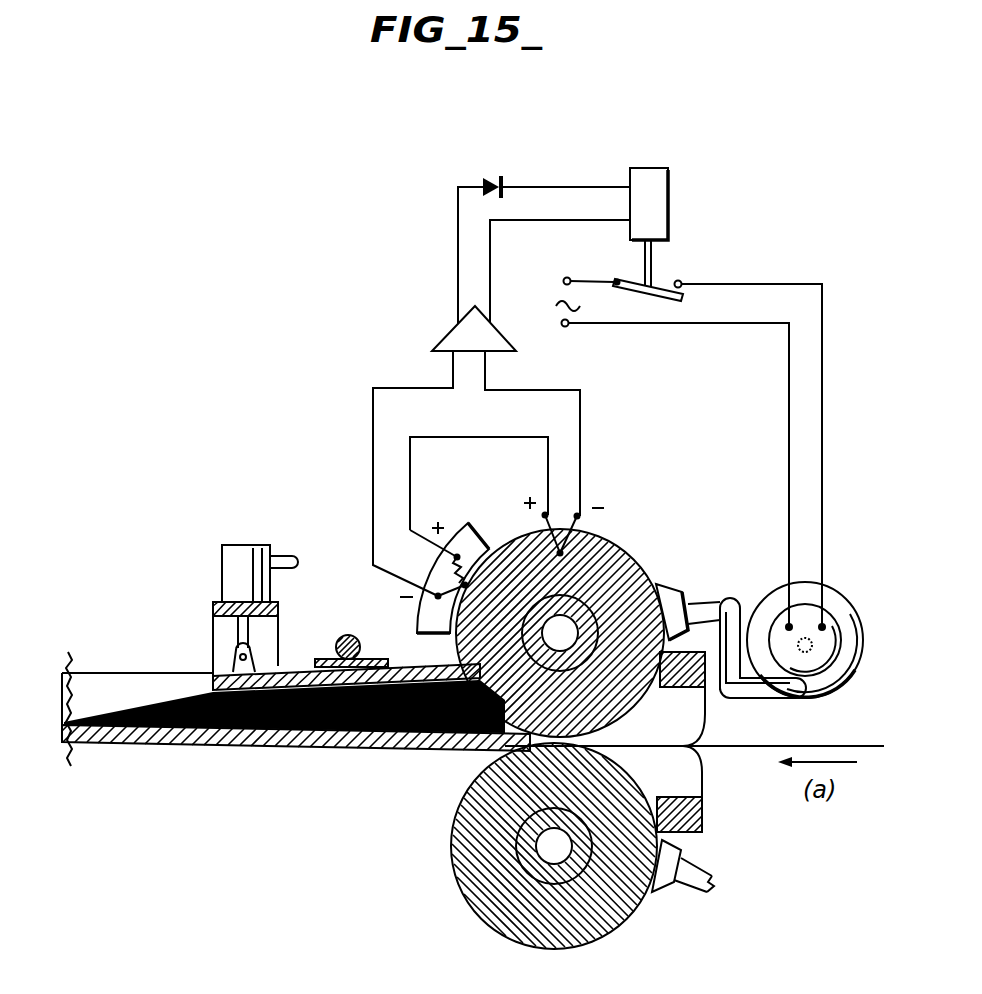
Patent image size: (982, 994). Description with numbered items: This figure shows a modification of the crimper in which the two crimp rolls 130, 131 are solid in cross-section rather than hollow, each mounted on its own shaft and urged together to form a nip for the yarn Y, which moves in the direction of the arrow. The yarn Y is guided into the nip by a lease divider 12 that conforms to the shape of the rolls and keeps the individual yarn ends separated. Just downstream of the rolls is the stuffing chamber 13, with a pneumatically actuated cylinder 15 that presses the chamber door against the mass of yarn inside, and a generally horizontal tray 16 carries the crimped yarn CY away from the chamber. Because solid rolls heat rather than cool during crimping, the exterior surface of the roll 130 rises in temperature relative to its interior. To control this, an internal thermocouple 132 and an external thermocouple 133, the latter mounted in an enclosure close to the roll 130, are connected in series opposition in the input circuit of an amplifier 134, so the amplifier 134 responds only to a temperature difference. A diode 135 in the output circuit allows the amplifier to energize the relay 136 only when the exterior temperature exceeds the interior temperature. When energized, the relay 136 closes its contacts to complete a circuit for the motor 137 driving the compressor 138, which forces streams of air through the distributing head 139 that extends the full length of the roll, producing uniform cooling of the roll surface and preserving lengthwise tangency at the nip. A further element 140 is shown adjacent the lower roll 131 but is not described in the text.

The lease divider 12 is at (675, 778).
The stuffing chamber 13 is at (418, 662).
The pneumatically actuated cylinder 15 is at (220, 566).
The tray 16 is at (287, 730).
The roll 130 is at (622, 570).
The roll 131 is at (464, 863).
The internal thermocouple 132 is at (588, 535).
The external thermocouple 133 is at (455, 557).
The amplifier 134 is at (450, 336).
The diode 135 is at (493, 179).
The relay 136 is at (668, 199).
The motor 137 is at (820, 654).
The compressor 138 is at (842, 600).
The distributing head 139 is at (684, 589).
The bracket 140 is at (659, 890).
The crimped yarn CY is at (89, 692).
The yarn Y is at (828, 747).